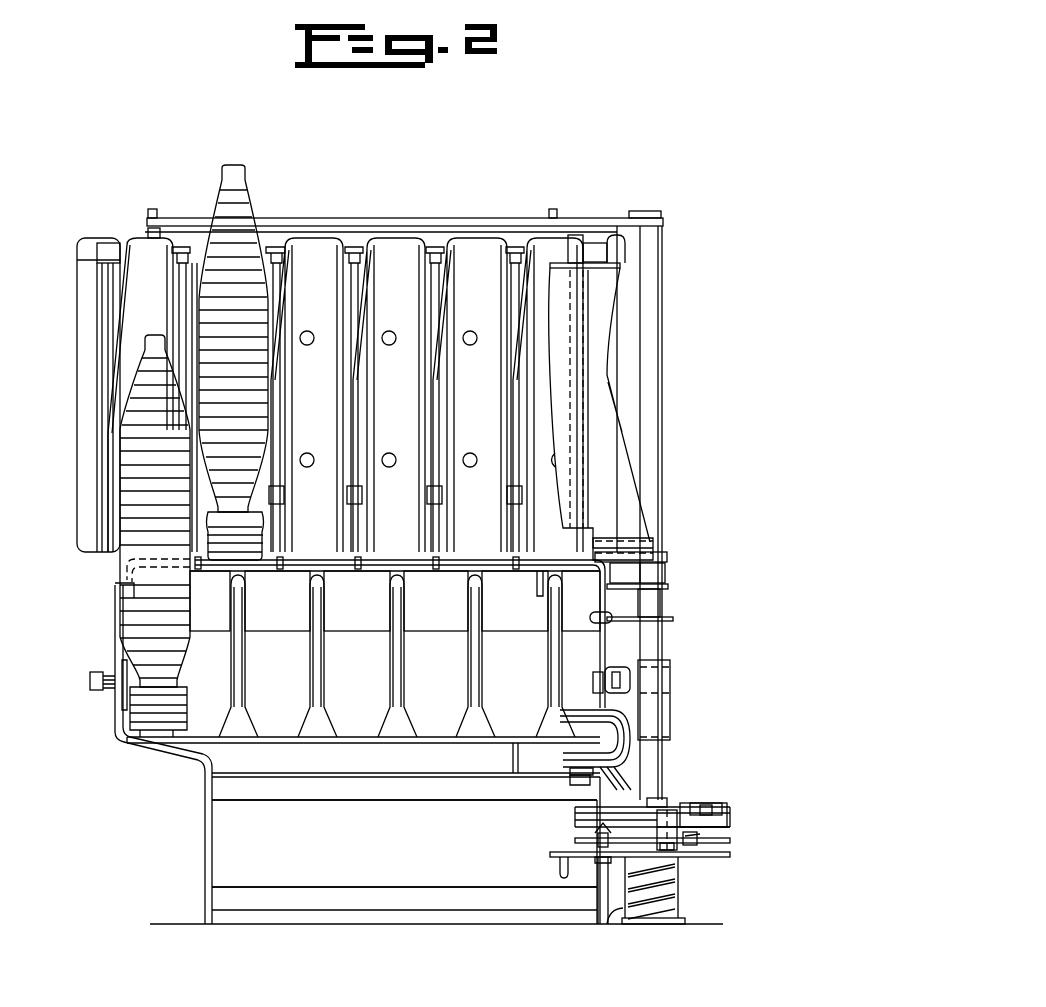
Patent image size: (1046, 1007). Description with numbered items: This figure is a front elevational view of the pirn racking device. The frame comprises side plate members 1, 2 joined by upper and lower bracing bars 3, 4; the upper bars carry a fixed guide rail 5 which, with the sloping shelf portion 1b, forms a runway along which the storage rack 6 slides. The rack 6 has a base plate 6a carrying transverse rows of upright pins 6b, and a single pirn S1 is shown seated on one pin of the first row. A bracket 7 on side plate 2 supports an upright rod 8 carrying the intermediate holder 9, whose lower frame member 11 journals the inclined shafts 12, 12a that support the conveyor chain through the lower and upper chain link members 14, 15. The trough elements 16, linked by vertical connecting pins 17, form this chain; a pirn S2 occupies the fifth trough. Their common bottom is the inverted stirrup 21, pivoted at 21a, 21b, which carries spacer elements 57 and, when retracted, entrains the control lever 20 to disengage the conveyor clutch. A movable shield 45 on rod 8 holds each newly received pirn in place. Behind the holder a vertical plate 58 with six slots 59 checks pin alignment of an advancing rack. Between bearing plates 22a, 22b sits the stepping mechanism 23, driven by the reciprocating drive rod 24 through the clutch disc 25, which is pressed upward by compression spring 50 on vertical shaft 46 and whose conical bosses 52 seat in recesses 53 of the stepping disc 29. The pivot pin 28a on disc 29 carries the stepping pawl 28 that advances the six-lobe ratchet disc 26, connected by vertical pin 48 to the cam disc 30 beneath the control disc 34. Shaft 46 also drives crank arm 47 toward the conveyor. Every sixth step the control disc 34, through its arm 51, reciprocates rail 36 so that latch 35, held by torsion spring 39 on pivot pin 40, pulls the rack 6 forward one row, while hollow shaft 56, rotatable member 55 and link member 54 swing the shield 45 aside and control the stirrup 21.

The side plate member 1 is at (205, 844).
The sloping shelf portion 1b is at (160, 760).
The side plate member 2 is at (608, 918).
The upper transverse bracing bar 3 is at (343, 800).
The lower transverse bracing bar 4 is at (375, 892).
The fixed guide rail 5 is at (511, 761).
The storage rack 6 is at (441, 727).
The base plate 6a is at (402, 742).
The upright pins 6b is at (312, 684).
The bracket 7 is at (680, 902).
The upright rod 8 is at (655, 347).
The intermediate holder 9 is at (490, 210).
The lower frame member 11 is at (664, 556).
The shaft 12 is at (553, 234).
The shaft 12a is at (150, 230).
The lower chain link member 14 is at (346, 493).
The upper chain link member 15 is at (96, 258).
The trough-shaped element 16 is at (137, 245).
The vertical connecting pin 17 is at (100, 305).
The control lever 20 is at (536, 592).
The inverted stirrup member 21 is at (372, 570).
The pivot 21a is at (90, 681).
The pivot 21b is at (590, 682).
The lower bearing plate 22a is at (670, 924).
The upper bearing plate 22b is at (670, 582).
The stepping mechanism 23 is at (714, 800).
The drive rod 24 is at (559, 866).
The clutch disc 25 is at (720, 858).
The ratchet disc 26 is at (585, 829).
The stepping pawl 28 is at (732, 823).
The pivot pin 28a is at (672, 808).
The stepping disc 29 is at (600, 842).
The cam disc 30 is at (576, 810).
The control disc 34 is at (722, 805).
The latch 35 is at (578, 720).
The rail 36 is at (572, 756).
The torsion spring 39 is at (568, 772).
The pivot pin 40 is at (570, 781).
The shield 45 is at (622, 482).
The vertical shaft 46 is at (662, 604).
The crank arm 47 is at (670, 588).
The vertical pin 48 is at (576, 821).
The helical compression spring 50 is at (680, 890).
The arm 51 is at (630, 790).
The conical bosses 52 is at (697, 845).
The recesses 53 is at (703, 836).
The link member 54 is at (598, 616).
The rotatable member 55 is at (674, 619).
The hollow shaft 56 is at (660, 712).
The spacer elements 57 is at (283, 570).
The vertical plate 58 is at (372, 632).
The slots 59 is at (306, 624).
The pirn S1 is at (133, 543).
The pirn S2 is at (245, 197).